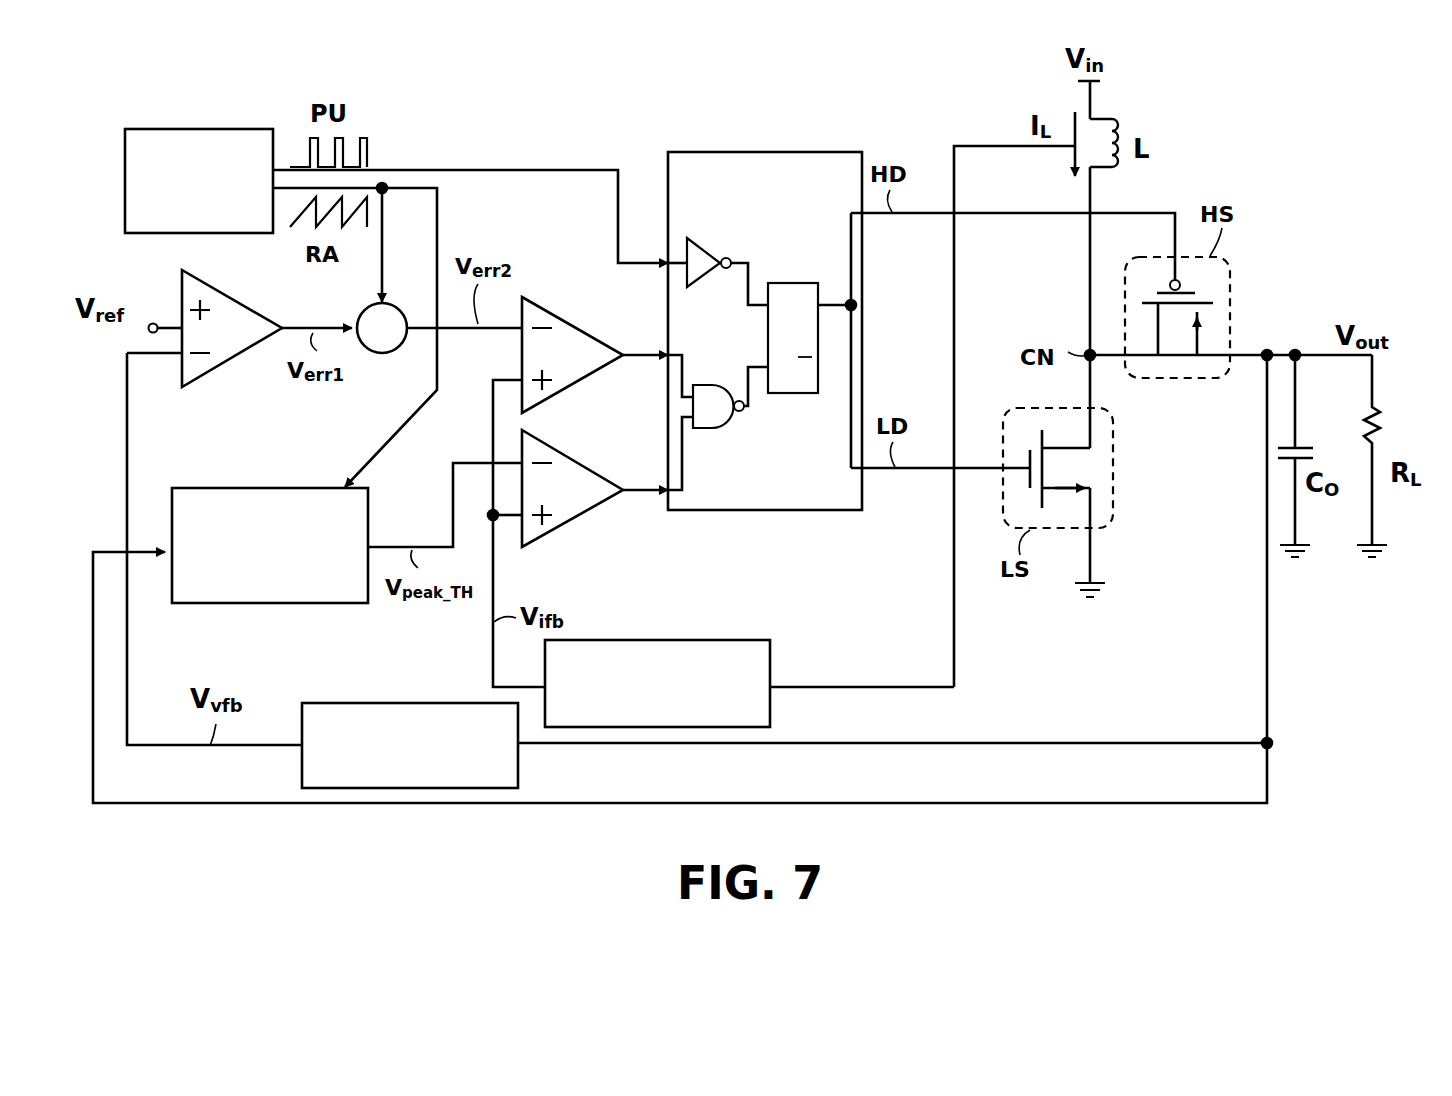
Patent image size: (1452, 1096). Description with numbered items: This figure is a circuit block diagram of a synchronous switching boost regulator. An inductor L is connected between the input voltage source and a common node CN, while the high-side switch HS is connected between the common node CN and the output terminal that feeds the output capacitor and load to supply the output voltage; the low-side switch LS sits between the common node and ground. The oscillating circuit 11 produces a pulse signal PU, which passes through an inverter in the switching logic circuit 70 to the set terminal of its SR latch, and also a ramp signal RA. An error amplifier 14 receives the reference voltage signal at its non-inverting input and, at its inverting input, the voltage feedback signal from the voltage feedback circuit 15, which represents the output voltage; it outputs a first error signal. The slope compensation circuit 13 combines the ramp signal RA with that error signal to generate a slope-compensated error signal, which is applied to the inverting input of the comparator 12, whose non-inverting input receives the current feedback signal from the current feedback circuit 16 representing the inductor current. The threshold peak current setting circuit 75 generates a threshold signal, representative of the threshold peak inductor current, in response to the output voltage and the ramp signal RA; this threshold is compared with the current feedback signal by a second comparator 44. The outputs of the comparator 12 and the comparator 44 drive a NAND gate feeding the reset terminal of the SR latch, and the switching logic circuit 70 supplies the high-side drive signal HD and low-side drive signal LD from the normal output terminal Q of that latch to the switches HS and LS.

The oscillating circuit 11 is at (203, 129).
The comparator 12 is at (604, 326).
The slope compensation circuit 13 is at (383, 356).
The error amplifier 14 is at (223, 372).
The voltage feedback circuit 15 is at (356, 702).
The current feedback circuit 16 is at (635, 640).
The comparator 44 is at (606, 461).
The switching logic circuit 70 is at (768, 152).
The threshold peak current setting circuit 75 is at (240, 488).